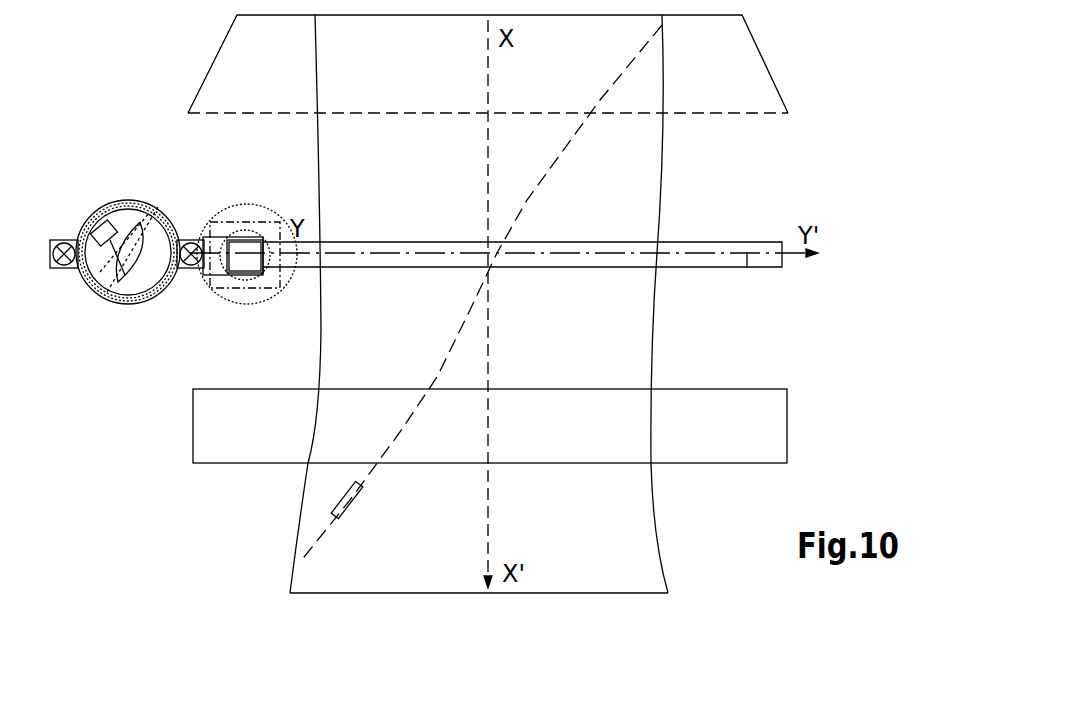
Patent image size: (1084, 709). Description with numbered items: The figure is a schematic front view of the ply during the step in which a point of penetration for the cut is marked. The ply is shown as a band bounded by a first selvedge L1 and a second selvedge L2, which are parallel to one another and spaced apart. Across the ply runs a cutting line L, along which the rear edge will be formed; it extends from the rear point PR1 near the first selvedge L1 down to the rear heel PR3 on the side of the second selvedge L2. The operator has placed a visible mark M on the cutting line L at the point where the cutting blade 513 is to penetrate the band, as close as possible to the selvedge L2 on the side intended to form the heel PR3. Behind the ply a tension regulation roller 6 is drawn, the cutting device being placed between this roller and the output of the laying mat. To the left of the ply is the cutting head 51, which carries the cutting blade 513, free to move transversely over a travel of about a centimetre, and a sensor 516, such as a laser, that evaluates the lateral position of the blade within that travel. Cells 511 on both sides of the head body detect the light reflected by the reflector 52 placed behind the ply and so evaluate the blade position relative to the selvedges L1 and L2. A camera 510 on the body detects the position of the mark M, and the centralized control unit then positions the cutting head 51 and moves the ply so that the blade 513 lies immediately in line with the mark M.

The cutting head 51 is at (125, 185).
The camera 510 is at (247, 240).
The cells 511 is at (60, 270).
The cutting blade 513 is at (135, 304).
The sensor 516 is at (97, 225).
The reflector 52 is at (748, 268).
The tension regulation roller 6 is at (722, 432).
The cutting line L is at (497, 256).
The first selvedge L1 is at (665, 172).
The second selvedge L2 is at (312, 132).
The rear point PR1 is at (655, 72).
The rear heel PR3 is at (304, 577).
The mark M is at (350, 507).